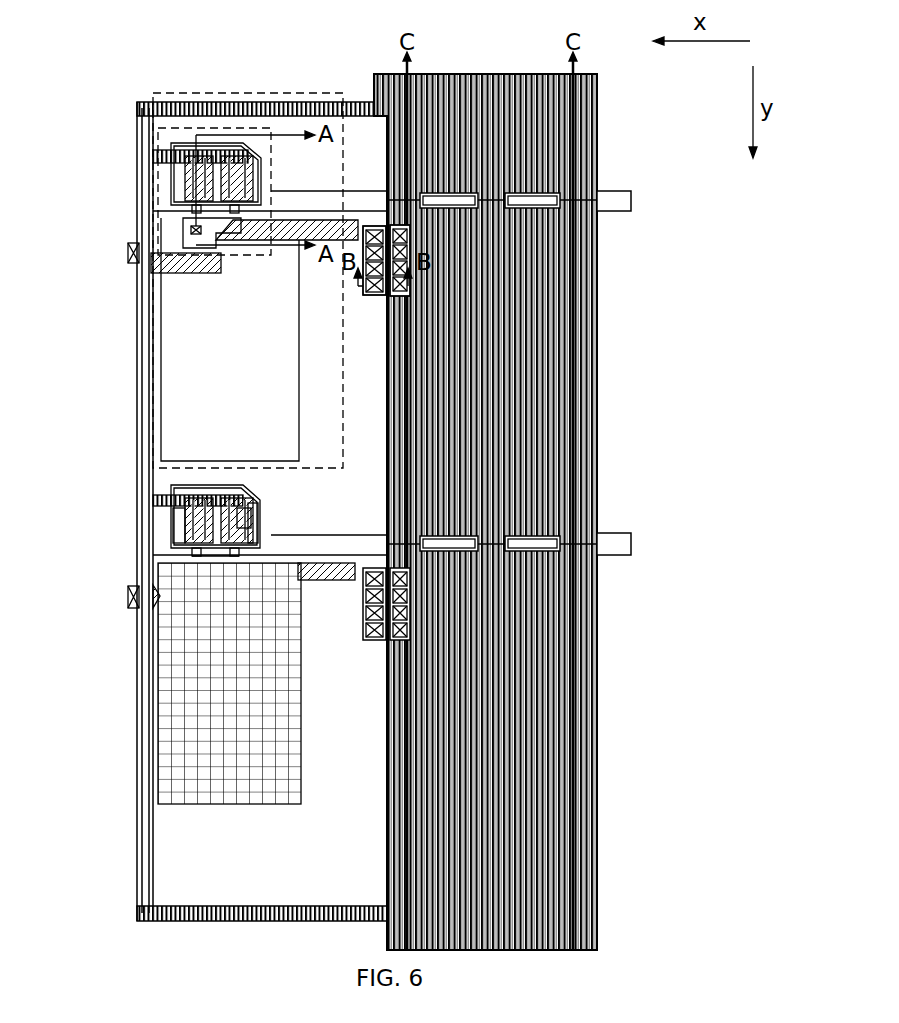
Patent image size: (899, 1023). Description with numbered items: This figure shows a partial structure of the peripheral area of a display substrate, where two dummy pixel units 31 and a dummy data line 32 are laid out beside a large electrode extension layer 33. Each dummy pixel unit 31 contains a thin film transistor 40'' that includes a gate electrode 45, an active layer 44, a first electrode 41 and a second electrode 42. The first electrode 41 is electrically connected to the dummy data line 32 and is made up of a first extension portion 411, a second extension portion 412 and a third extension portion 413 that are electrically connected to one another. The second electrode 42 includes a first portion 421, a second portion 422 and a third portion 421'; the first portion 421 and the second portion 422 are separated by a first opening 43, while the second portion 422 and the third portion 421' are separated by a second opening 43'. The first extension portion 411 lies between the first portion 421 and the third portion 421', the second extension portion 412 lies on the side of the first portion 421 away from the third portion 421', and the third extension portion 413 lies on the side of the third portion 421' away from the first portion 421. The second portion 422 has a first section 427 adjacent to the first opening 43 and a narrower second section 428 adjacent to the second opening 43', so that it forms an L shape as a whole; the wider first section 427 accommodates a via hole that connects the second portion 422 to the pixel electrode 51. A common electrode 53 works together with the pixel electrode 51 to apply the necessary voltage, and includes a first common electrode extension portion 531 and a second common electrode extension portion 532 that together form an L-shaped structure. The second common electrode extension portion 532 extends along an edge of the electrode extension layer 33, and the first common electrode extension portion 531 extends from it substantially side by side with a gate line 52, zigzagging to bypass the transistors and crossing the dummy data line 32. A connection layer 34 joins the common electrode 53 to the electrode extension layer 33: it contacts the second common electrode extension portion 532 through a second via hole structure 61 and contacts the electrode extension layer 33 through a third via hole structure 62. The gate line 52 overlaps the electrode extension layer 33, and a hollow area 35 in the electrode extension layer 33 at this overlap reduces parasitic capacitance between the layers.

The dummy pixel unit 31 is at (282, 84).
The dummy data line 32 is at (130, 690).
The electrode extension layer 33 is at (525, 512).
The connection layer 34 is at (386, 290).
The hollow area 35 is at (553, 185).
The thin film transistor 40'' is at (212, 151).
The first electrode 41 is at (237, 493).
The first extension portion 411 is at (185, 500).
The second extension portion 412 is at (200, 504).
The third extension portion 413 is at (245, 523).
The second electrode 42 is at (100, 556).
The first portion 421 is at (127, 524).
The third portion 421' is at (291, 586).
The second portion 422 is at (150, 581).
The first opening 43 is at (144, 552).
The second opening 43' is at (267, 606).
The active layer 44 is at (240, 512).
The gate electrode 45 is at (165, 478).
The first section 427 is at (180, 233).
The second section 428 is at (225, 217).
The pixel electrode 51 is at (152, 752).
The gate line 52 is at (611, 536).
The common electrode 53 is at (304, 208).
The first common electrode extension portion 531 is at (318, 212).
The second common electrode extension portion 532 is at (367, 218).
The second via hole structure 61 is at (360, 284).
The third via hole structure 62 is at (393, 288).